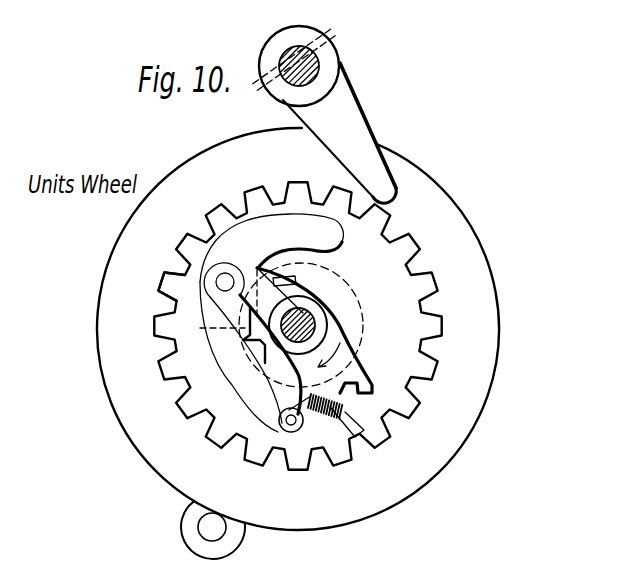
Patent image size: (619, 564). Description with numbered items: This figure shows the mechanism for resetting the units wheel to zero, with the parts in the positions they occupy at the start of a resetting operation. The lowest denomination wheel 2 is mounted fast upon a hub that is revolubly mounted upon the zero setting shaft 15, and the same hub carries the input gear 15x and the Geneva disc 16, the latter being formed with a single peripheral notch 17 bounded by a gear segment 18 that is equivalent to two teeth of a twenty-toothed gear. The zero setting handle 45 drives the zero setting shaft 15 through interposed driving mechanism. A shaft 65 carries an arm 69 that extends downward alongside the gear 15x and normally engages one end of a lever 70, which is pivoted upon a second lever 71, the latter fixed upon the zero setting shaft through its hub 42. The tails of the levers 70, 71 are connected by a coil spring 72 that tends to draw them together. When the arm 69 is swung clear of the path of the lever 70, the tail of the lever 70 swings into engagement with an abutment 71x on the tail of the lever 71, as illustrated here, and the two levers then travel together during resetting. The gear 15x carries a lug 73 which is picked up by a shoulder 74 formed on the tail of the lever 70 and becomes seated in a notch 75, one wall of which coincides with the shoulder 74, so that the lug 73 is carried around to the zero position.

The lowest denomination wheel 2 is at (115, 378).
The zero setting shaft 15 is at (305, 318).
The input gear 15x is at (168, 290).
The Geneva disc 16 is at (345, 280).
The notch 17 is at (228, 328).
The gear segment 18 is at (261, 268).
The hub 42 is at (352, 320).
The zero setting handle 45 is at (232, 534).
The shaft 65 is at (282, 55).
The arm 69 is at (352, 106).
The lever 70 is at (248, 235).
The lever 71 is at (345, 351).
The abutment 71x is at (307, 397).
The coil spring 72 is at (342, 424).
The lug 73 is at (296, 280).
The shoulder 74 is at (277, 357).
The notch 75 is at (257, 349).